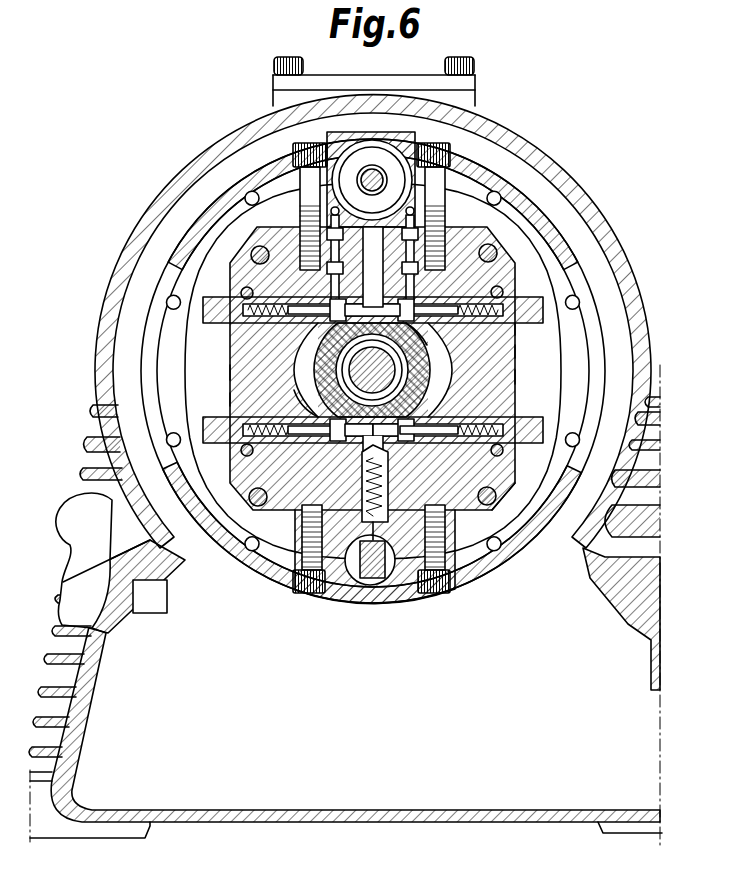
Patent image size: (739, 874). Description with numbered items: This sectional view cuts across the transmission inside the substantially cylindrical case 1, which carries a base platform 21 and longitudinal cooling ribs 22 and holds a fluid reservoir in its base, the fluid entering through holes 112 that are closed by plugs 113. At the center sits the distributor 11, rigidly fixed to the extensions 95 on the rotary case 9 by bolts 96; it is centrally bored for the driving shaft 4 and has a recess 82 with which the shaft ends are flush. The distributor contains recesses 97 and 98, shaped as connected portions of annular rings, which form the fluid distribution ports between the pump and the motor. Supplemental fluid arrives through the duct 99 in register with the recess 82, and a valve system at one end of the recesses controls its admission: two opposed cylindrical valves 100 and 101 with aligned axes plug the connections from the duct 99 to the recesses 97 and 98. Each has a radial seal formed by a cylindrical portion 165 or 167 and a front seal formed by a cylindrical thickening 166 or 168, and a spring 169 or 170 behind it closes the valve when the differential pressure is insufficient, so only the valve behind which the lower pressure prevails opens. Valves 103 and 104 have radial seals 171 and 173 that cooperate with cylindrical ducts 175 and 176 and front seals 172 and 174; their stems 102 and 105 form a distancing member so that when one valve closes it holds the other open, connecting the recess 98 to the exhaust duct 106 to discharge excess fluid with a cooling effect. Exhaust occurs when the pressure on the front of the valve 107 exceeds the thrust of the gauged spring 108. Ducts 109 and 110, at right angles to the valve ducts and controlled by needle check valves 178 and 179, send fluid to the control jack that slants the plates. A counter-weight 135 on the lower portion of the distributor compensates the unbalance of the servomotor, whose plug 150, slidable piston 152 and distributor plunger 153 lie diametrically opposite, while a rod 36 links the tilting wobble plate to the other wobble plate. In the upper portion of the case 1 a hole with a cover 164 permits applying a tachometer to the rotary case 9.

The case 1 is at (373, 321).
The driving shaft 4 is at (388, 374).
The rotary case 9 is at (394, 371).
The distributor 11 is at (373, 352).
The base platform 21 is at (46, 719).
The longitudinal cooling ribs 22 is at (56, 642).
The rod 36 is at (377, 592).
The recess 82 is at (392, 368).
The extensions 95 is at (381, 371).
The bolts 96 is at (379, 422).
The recess 97 is at (536, 378).
The recess 98 is at (212, 376).
The duct 99 is at (312, 397).
The cylindrical valve 100 is at (538, 359).
The cylindrical valve 101 is at (268, 329).
The stem 102 is at (393, 447).
The valve 103 is at (478, 448).
The valve 104 is at (268, 448).
The stem 105 is at (359, 447).
The exhaust duct 106 is at (212, 400).
The valve 107 is at (394, 493).
The gauged spring 108 is at (392, 492).
The duct 109 is at (399, 253).
The duct 110 is at (346, 253).
The holes 112 is at (89, 561).
The plugs 113 is at (71, 557).
The counter-weight 135 is at (374, 577).
The plug 150 is at (321, 178).
The piston 152 is at (404, 104).
The distributor plunger 153 is at (303, 168).
The cover 164 is at (333, 73).
The cylindrical portion 165 is at (434, 370).
The cylindrical thickening 166 is at (430, 340).
The cylindrical portion 167 is at (312, 370).
The cylindrical thickening 168 is at (361, 370).
The spring 169 is at (538, 336).
The spring 170 is at (306, 275).
The cylindrical portion 171 is at (420, 445).
The thickened portion 172 is at (435, 448).
The cylindrical portion 173 is at (331, 445).
The thickened portion 174 is at (315, 448).
The cylindrical duct 175 is at (529, 525).
The cylindrical duct 176 is at (299, 404).
The needle check valve 178 is at (435, 278).
The needle check valve 179 is at (307, 278).